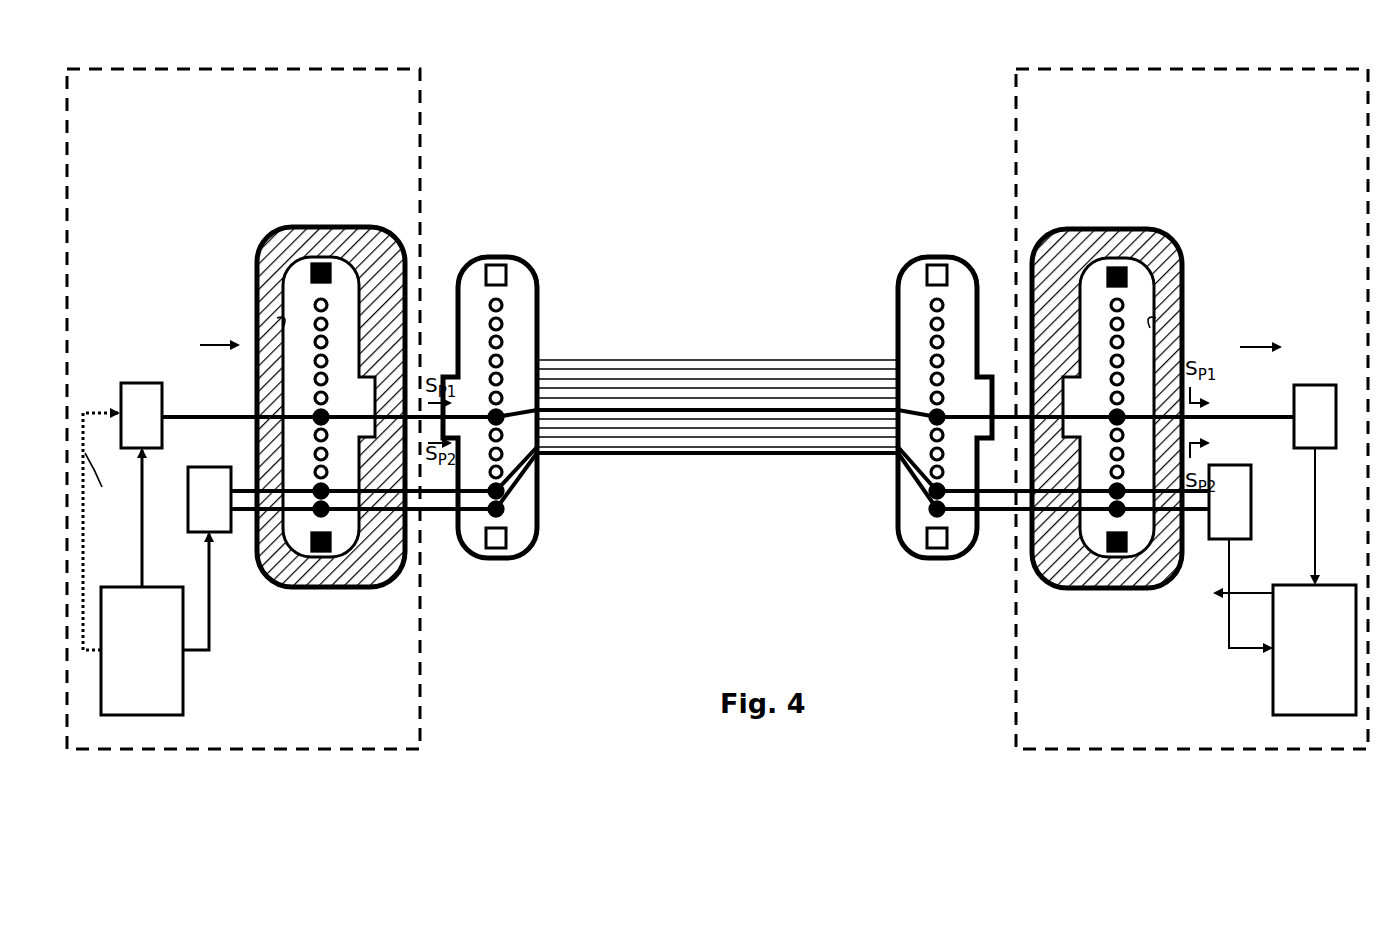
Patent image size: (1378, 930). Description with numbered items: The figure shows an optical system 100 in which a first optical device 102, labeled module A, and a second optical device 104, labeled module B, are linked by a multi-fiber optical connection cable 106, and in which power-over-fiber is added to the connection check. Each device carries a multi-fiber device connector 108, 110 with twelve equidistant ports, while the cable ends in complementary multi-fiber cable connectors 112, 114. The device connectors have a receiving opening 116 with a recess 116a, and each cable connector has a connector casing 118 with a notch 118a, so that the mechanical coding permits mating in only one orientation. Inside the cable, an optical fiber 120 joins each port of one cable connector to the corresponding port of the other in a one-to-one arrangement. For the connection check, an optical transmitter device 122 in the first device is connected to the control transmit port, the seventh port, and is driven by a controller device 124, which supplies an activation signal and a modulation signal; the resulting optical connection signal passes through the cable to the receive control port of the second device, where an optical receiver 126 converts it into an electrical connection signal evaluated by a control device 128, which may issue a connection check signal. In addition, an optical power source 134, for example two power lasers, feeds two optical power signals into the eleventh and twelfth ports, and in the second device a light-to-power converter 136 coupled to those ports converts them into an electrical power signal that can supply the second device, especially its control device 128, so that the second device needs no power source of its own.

The optical system 100 is at (740, 124).
The optical device 102 is at (247, 68).
The optical device 104 is at (1175, 68).
The multi-fiber optical connection cable 106 is at (682, 348).
The multi-fiber device connector 108 is at (316, 226).
The multi-fiber device connector 110 is at (1107, 227).
The multi-fiber cable connector 112 is at (538, 268).
The multi-fiber cable connector 114 is at (897, 268).
The receiving opening 116 is at (283, 322).
The recess 116a is at (365, 397).
The connector casing 118 is at (496, 255).
The notch 118a is at (445, 320).
The optical fiber 120 is at (642, 453).
The optical transmitter device 122 is at (142, 315).
The controller device 124 is at (170, 619).
The optical receiver 126 is at (1330, 315).
The control device 128 is at (1288, 624).
The optical power source 134 is at (213, 441).
The light-to-power converter 136 is at (1238, 428).